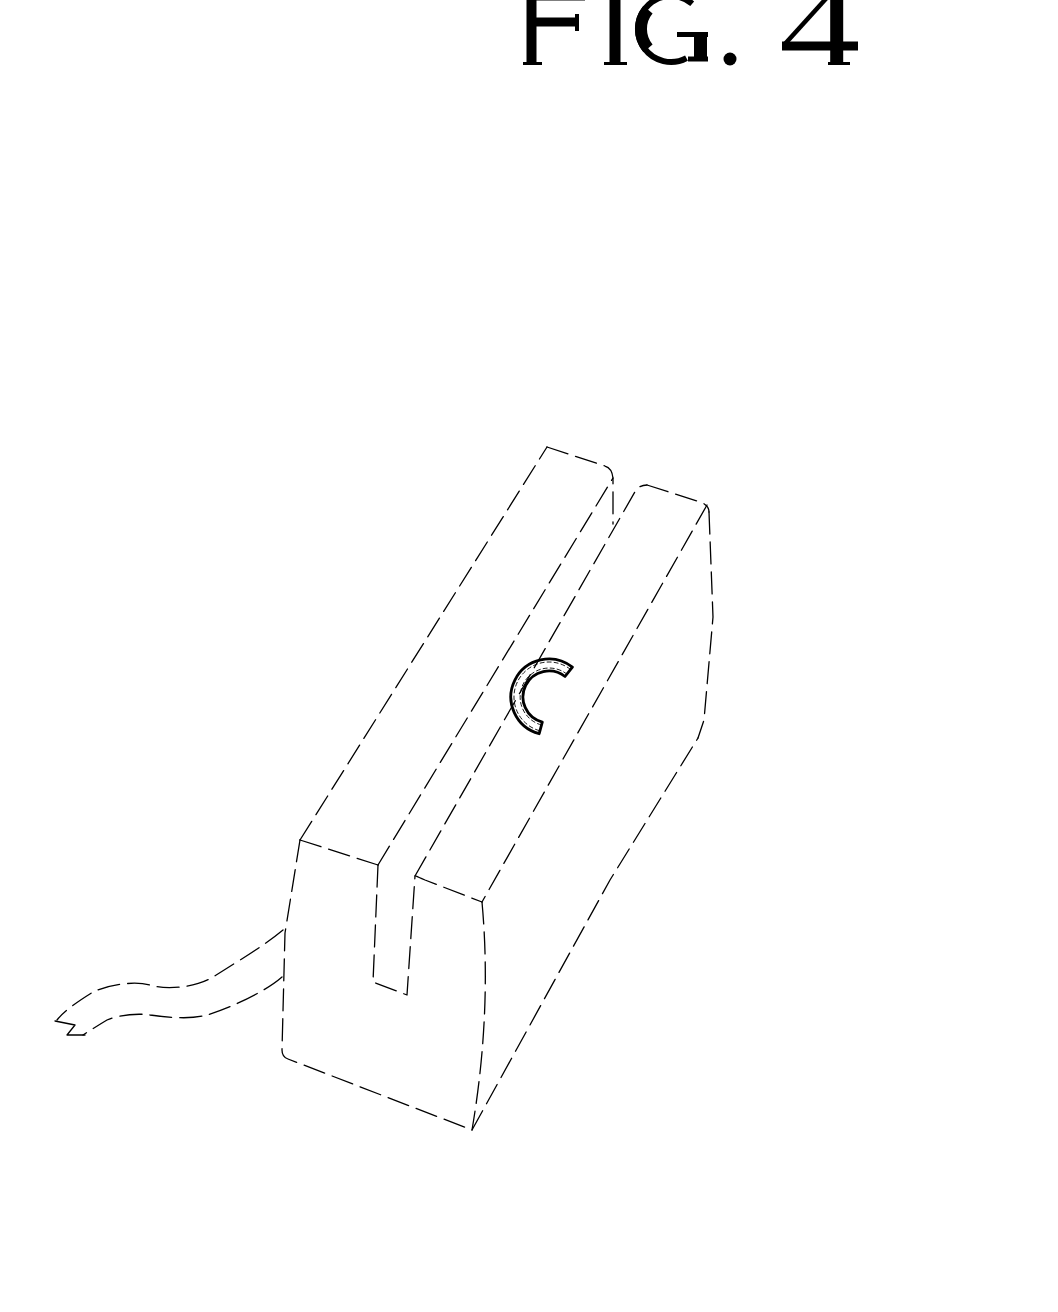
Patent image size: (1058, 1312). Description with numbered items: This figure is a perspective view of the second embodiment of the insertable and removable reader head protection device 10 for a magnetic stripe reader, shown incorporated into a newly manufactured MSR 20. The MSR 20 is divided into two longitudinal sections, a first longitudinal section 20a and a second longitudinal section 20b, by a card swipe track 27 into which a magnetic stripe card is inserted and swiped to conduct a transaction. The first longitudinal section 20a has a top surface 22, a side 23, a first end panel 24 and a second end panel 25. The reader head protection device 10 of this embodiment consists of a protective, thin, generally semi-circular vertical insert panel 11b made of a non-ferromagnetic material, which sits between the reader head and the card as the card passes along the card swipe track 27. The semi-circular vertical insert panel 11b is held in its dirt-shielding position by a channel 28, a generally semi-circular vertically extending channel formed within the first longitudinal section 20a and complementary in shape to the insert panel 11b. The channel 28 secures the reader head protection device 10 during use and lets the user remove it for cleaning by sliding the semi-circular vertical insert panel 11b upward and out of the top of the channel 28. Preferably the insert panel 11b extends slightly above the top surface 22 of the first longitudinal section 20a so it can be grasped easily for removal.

The reader head protection device 10 is at (491, 659).
The semi-circular vertical insert panel 11b is at (512, 692).
The MSR 20 is at (451, 760).
The first longitudinal section 20a is at (683, 450).
The second longitudinal section 20b is at (484, 421).
The top surface 22 is at (622, 630).
The side 23 is at (572, 888).
The first end panel 24 is at (370, 1063).
The second end panel 25 is at (675, 493).
The card swipe track 27 is at (392, 882).
The channel 28 is at (540, 706).